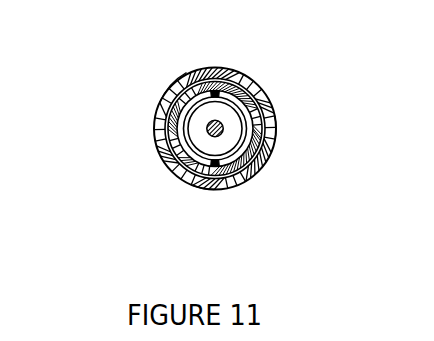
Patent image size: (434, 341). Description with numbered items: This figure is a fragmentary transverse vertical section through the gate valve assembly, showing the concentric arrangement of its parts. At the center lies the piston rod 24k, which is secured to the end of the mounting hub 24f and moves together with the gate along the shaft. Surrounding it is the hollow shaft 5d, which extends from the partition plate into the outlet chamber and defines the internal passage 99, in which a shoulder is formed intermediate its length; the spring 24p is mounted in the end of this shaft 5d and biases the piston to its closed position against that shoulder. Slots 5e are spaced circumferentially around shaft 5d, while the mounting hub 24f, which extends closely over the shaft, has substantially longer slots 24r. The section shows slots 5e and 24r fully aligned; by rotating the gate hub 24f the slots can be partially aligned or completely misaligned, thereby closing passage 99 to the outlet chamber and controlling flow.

The mounting hub 24f is at (195, 76).
The hollow shaft 5d is at (165, 103).
The spring 24p is at (219, 91).
The passage 99 is at (272, 125).
The piston rod 24k is at (222, 134).
The slots 24r is at (185, 180).
The slots 5e is at (202, 191).